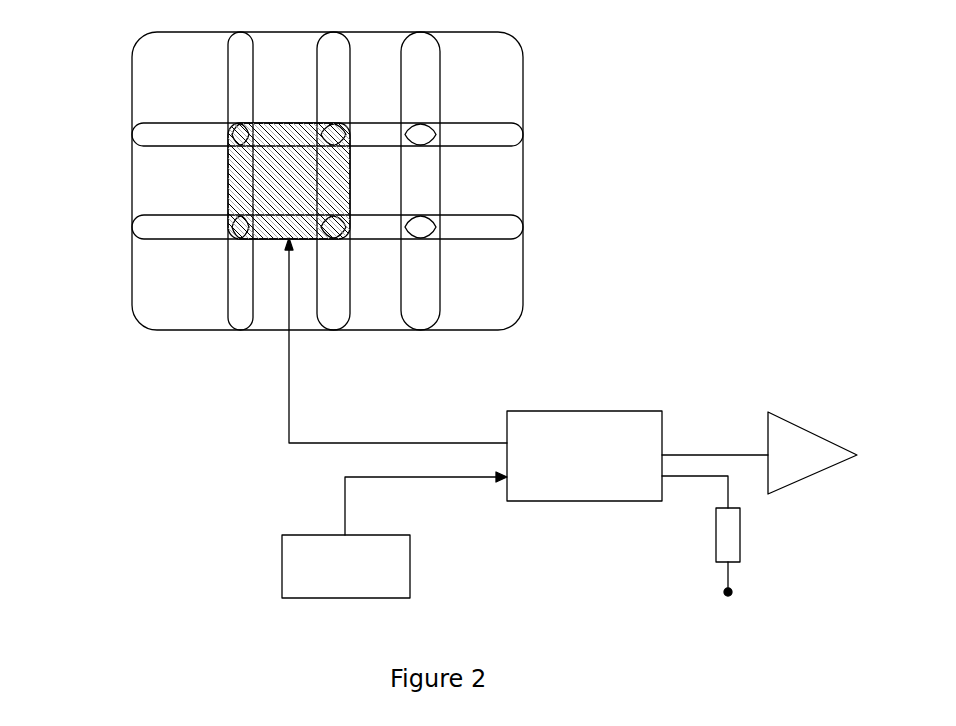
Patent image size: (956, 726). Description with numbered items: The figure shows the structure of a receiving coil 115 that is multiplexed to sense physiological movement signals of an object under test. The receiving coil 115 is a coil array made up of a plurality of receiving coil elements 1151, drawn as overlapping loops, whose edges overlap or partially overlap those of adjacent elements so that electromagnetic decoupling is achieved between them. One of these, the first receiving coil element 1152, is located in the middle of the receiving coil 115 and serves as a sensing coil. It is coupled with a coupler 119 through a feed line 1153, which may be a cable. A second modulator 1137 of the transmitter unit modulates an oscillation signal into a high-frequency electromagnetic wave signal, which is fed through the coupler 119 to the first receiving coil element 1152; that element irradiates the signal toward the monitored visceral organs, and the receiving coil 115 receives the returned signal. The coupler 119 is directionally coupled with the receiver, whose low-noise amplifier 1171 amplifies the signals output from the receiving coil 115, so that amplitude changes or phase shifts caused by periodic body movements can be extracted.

The receiving coil 115 is at (346, 172).
The receiving coil elements 1151 is at (132, 93).
The first receiving coil element 1152 is at (228, 183).
The feed line 1153 is at (391, 443).
The coupler 119 is at (581, 411).
The low-noise amplifier 1171 is at (805, 430).
The second modulator 1137 is at (282, 570).